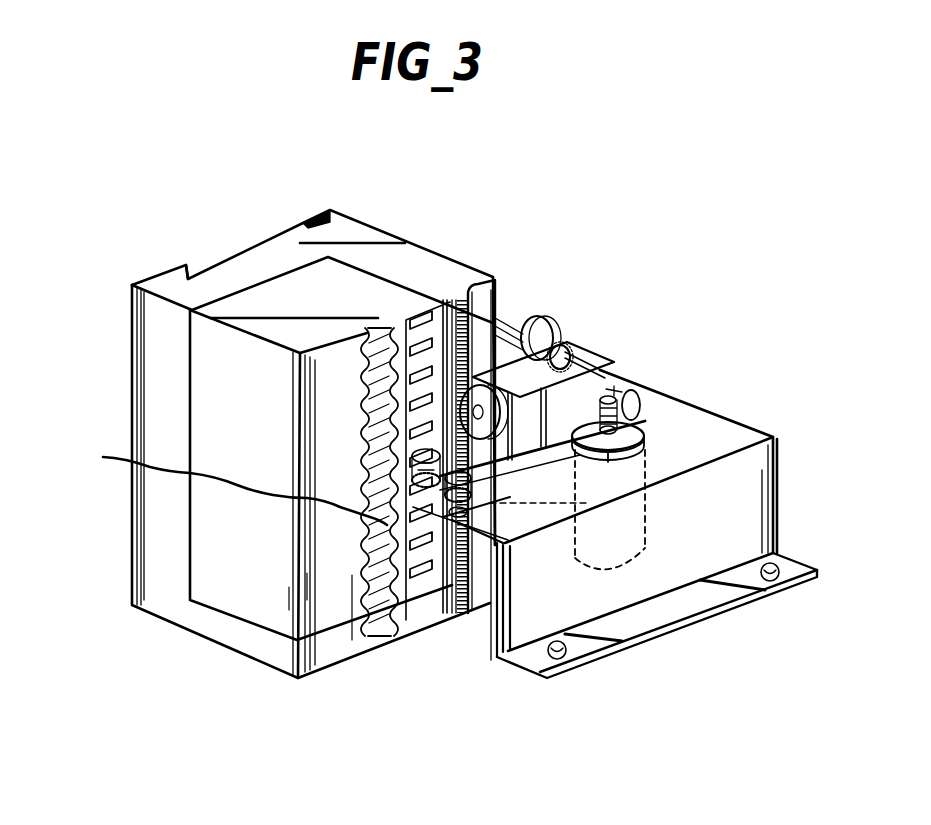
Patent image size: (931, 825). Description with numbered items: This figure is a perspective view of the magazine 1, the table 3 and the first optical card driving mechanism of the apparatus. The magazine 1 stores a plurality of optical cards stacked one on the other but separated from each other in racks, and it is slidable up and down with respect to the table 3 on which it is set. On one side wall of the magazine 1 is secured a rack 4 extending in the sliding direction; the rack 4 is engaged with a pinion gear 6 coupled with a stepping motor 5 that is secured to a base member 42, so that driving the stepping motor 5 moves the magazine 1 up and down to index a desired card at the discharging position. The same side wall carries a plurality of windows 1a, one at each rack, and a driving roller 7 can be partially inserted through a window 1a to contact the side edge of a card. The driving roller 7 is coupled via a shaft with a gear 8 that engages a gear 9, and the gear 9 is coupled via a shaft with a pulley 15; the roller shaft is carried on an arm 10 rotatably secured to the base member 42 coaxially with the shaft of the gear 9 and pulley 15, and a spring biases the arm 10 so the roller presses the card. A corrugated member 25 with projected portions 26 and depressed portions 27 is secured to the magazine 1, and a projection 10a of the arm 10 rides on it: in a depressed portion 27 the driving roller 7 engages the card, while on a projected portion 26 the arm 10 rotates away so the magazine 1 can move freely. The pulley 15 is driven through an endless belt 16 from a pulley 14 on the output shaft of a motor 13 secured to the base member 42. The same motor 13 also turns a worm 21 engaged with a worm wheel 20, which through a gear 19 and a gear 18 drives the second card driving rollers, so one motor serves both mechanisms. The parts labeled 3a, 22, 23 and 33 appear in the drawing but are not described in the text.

The magazine 1 is at (207, 580).
The windows 1a is at (421, 320).
The table 3 is at (143, 605).
The notch 3a is at (196, 267).
The rack 4 is at (480, 282).
The stepping motor 5 is at (613, 380).
The pinion gear 6 is at (600, 390).
The driving roller 7 is at (352, 575).
The gear 8 is at (480, 577).
The gear 9 is at (410, 595).
The arm 10 is at (405, 560).
The projection 10a is at (221, 483).
The motor 13 is at (655, 505).
The pulley 14 is at (750, 427).
The pulley 15 is at (430, 570).
The endless belt 16 is at (538, 547).
The gear 18 is at (540, 327).
The gear 19 is at (508, 316).
The worm wheel 20 is at (643, 390).
The worm 21 is at (643, 417).
The bevel gear 22 is at (557, 357).
The arm 23 is at (482, 590).
The corrugated member 25 is at (377, 330).
The projected portions 26 is at (307, 578).
The depressed portions 27 is at (290, 590).
The shaft 33 is at (578, 378).
The base member 42 is at (580, 652).